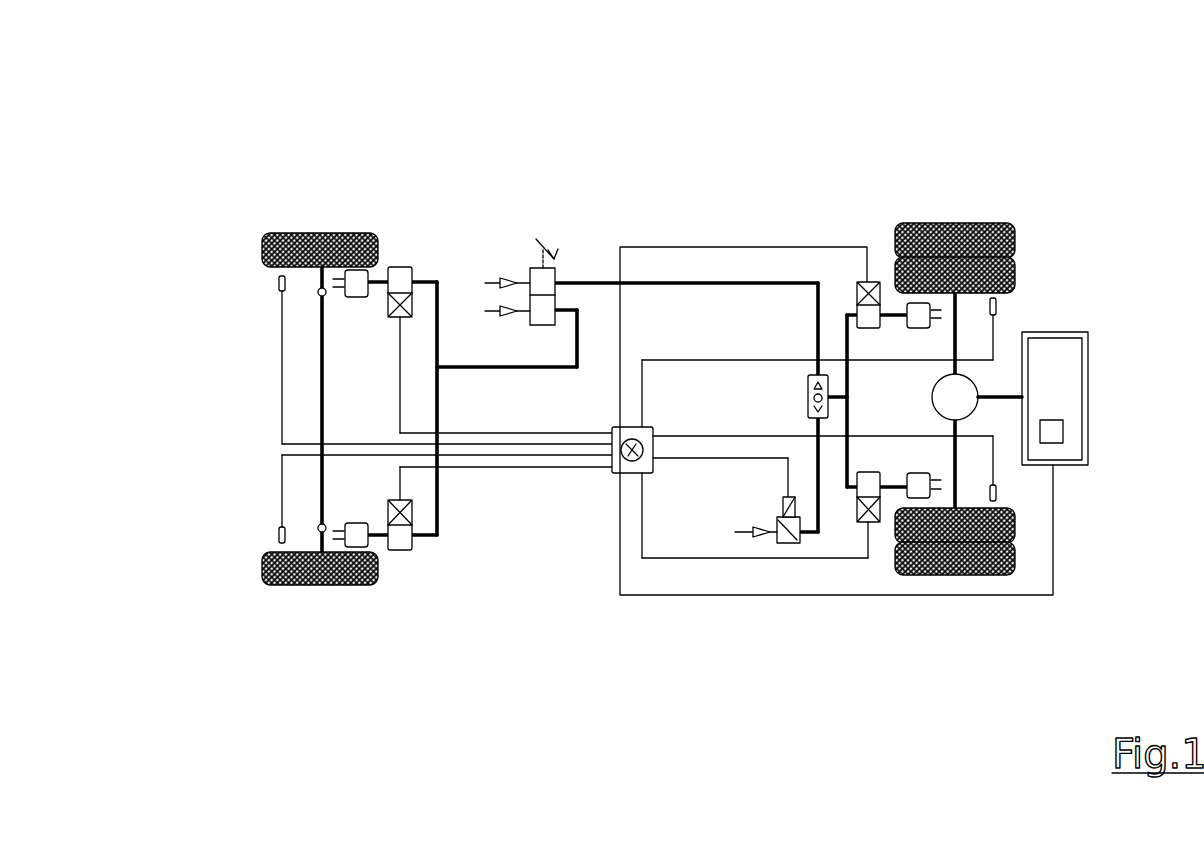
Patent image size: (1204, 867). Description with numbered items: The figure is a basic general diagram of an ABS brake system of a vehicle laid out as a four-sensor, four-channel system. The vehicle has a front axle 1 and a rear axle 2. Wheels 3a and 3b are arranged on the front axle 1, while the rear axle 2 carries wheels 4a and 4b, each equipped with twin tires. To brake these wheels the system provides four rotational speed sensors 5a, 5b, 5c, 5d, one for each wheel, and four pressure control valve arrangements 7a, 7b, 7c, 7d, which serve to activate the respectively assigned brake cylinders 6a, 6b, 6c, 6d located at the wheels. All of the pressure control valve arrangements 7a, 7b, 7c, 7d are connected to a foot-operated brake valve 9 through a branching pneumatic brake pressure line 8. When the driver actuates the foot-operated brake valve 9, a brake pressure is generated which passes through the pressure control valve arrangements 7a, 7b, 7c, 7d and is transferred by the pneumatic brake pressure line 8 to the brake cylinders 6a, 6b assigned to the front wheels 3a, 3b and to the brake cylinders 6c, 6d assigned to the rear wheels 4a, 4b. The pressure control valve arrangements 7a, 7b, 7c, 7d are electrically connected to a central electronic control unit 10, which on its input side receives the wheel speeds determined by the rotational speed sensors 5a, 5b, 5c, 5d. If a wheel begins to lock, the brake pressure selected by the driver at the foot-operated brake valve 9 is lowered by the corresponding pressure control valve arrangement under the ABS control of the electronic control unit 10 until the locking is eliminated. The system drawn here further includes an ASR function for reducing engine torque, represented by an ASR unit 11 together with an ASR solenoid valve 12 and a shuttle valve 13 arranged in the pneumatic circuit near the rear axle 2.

The front axle 1 is at (325, 211).
The rear axle 2 is at (965, 200).
The wheel 3a is at (262, 249).
The wheel 3b is at (262, 567).
The wheel 4a is at (1015, 232).
The wheel 4b is at (1015, 555).
The rotational speed sensor 5a is at (279, 283).
The rotational speed sensor 5b is at (279, 535).
The rotational speed sensor 5c is at (996, 305).
The rotational speed sensor 5d is at (996, 494).
The brake cylinder 6a is at (358, 298).
The brake cylinder 6b is at (358, 522).
The brake cylinder 6c is at (918, 328).
The brake cylinder 6d is at (918, 475).
The pressure control valve arrangement 7a is at (396, 300).
The pressure control valve arrangement 7b is at (398, 512).
The pressure control valve arrangement 7c is at (870, 328).
The pressure control valve arrangement 7d is at (868, 472).
The pneumatic brake pressure line 8 is at (715, 247).
The foot-operated brake valve 9 is at (545, 285).
The electronic control unit 10 is at (622, 468).
The ASR unit 11 is at (1065, 397).
The ASR solenoid valve 12 is at (786, 526).
The shuttle valve 13 is at (808, 410).